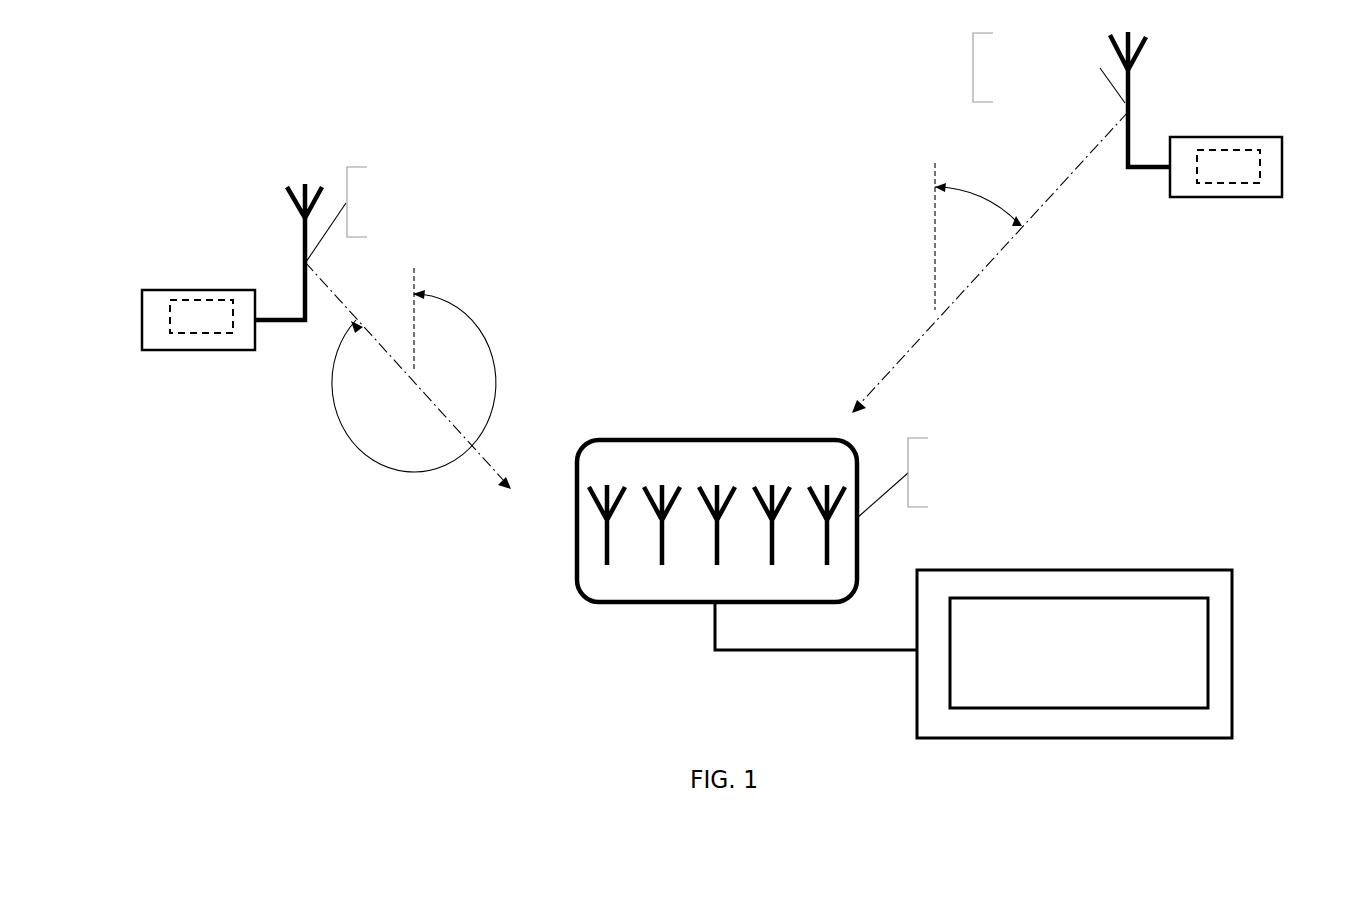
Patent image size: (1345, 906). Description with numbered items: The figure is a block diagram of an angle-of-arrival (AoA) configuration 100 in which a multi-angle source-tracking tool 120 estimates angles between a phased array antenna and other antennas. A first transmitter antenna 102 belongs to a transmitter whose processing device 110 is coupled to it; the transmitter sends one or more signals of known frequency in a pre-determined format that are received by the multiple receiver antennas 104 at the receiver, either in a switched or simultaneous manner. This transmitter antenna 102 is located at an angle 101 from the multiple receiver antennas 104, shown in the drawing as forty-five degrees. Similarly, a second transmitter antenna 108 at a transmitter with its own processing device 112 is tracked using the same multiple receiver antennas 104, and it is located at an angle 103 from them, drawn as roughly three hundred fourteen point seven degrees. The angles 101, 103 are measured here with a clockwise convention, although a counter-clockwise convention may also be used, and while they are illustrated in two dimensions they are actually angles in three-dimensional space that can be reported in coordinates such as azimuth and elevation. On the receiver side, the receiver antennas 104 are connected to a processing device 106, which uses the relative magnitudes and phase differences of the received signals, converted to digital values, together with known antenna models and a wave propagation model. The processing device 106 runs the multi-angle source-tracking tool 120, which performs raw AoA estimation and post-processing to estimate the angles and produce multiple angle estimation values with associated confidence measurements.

The AoA configuration 100 is at (402, 86).
The angle 101 is at (987, 196).
The transmitter antenna 102 is at (1146, 38).
The angle 103 is at (449, 298).
The receiver antennas 104 is at (708, 441).
The processing device 106 is at (1116, 570).
The transmitter antenna 108 is at (295, 204).
The processing device 110 is at (1279, 137).
The processing device 112 is at (148, 290).
The multi-angle source-tracking tool 120 is at (213, 328).